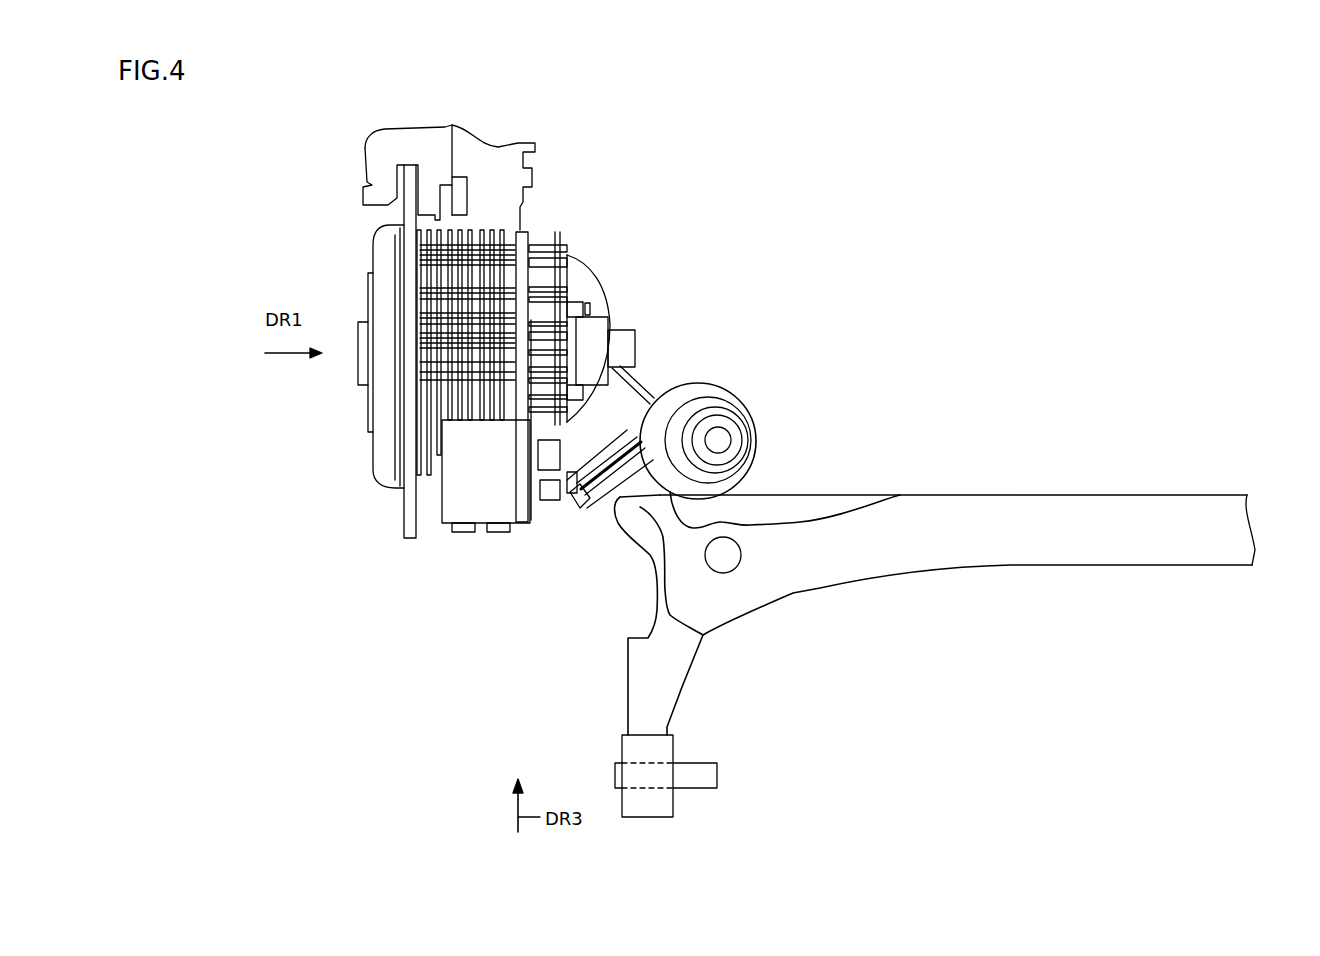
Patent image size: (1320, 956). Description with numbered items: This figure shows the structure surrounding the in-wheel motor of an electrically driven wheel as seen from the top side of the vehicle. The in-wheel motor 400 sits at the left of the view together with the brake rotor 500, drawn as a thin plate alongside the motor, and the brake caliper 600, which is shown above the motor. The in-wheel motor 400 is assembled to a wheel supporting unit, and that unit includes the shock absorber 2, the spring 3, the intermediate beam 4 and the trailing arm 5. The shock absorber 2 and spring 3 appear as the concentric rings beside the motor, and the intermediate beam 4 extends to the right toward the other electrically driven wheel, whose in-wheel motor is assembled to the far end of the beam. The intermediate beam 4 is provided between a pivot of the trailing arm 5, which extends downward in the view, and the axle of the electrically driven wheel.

The brake caliper 600 is at (439, 117).
The in-wheel motor 400 is at (445, 372).
The brake rotor 500 is at (410, 518).
The spring 3 is at (730, 409).
The shock absorber 2 is at (740, 441).
The intermediate beam 4 is at (1117, 554).
The trailing arm 5 is at (641, 679).